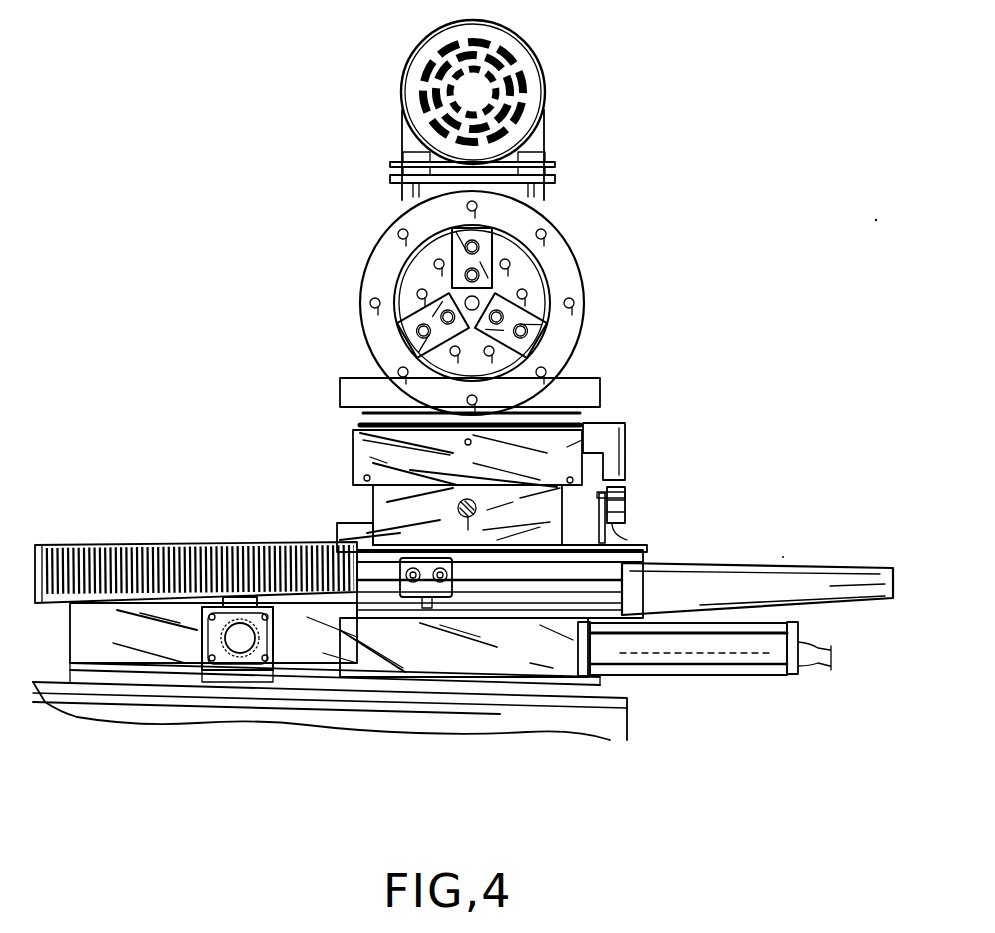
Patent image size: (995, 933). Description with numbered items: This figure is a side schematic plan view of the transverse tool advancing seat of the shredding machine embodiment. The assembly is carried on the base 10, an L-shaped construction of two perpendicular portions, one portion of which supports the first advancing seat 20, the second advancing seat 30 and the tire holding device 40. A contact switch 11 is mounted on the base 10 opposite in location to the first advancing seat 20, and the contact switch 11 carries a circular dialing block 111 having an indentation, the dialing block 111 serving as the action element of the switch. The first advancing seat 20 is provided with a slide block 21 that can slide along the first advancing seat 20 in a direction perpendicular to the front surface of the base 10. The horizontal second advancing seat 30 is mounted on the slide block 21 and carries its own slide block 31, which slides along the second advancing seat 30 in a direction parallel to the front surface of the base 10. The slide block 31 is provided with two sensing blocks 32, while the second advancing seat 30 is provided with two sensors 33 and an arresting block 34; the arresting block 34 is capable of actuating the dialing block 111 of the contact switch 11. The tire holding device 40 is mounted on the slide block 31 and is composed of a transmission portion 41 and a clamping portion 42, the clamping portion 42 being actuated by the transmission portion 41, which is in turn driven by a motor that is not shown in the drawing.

The base 10 is at (330, 745).
The contact switch 11 is at (213, 722).
The dialing block 111 is at (207, 529).
The first advancing seat 20 is at (491, 696).
The slide block 21 is at (735, 692).
The second advancing seat 30 is at (539, 491).
The slide block 31 is at (514, 396).
The sensing blocks 32 is at (649, 442).
The sensors 33 is at (661, 515).
The arresting block 34 is at (412, 700).
The tire holding device 40 is at (647, 92).
The transmission portion 41 is at (524, 92).
The clamping portion 42 is at (557, 265).